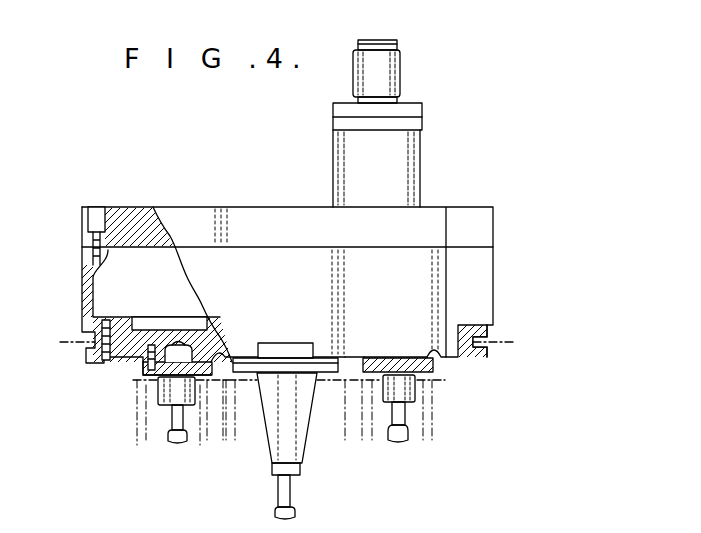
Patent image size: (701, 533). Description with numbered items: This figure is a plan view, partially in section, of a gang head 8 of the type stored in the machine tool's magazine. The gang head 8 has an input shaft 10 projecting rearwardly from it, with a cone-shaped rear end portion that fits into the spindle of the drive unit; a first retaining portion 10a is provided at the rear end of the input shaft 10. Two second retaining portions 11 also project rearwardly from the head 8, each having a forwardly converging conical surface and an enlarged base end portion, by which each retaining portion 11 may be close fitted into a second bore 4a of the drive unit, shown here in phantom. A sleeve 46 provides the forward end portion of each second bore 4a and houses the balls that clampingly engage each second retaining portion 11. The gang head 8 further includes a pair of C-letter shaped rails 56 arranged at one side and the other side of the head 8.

The gang head 8 is at (503, 221).
The C-letter shaped rails 56 is at (90, 365).
The sleeve 46 is at (156, 404).
The second retaining portion 11 is at (173, 445).
The input shaft 10 is at (278, 452).
The first retaining portion 10a is at (296, 512).
The second bore 4a is at (192, 415).